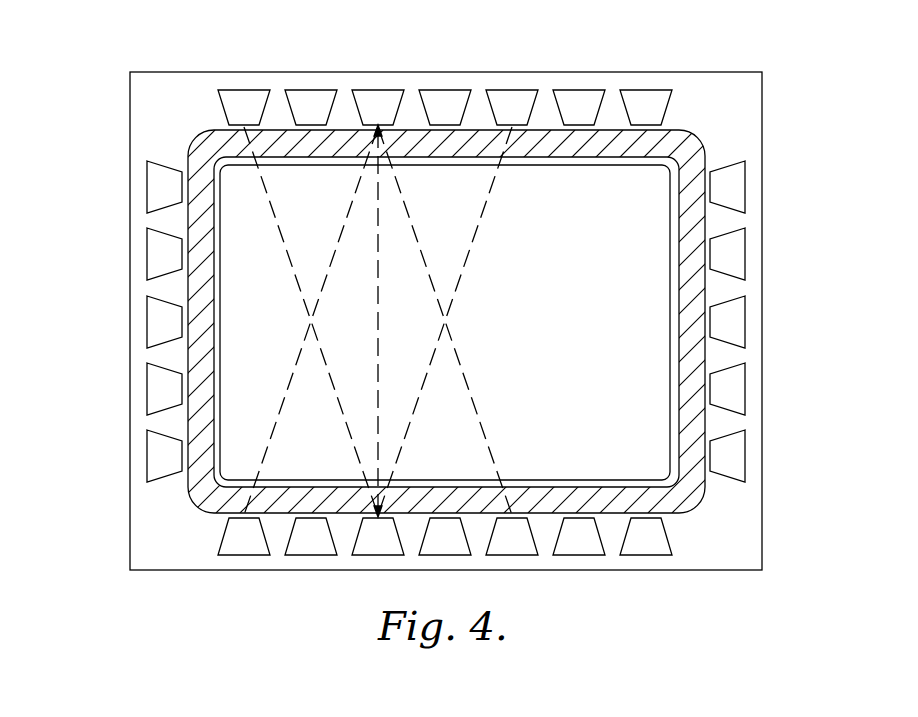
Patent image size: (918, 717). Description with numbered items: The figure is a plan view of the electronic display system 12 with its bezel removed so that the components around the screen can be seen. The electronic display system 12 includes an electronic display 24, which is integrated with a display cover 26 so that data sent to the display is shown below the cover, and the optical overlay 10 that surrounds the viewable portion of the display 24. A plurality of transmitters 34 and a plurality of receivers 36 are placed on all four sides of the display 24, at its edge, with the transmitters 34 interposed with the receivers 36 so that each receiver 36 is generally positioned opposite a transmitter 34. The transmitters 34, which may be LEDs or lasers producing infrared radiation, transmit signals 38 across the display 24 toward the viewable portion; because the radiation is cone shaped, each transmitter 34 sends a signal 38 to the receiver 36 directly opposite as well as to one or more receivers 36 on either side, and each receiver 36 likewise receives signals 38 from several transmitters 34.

The optical overlay 10 is at (712, 128).
The electronic display system 12 is at (382, 58).
The electronic display 24 is at (137, 79).
The display cover 26 is at (618, 219).
The transmitters 34 is at (218, 97).
The receivers 36 is at (733, 165).
The signals 38 is at (290, 262).